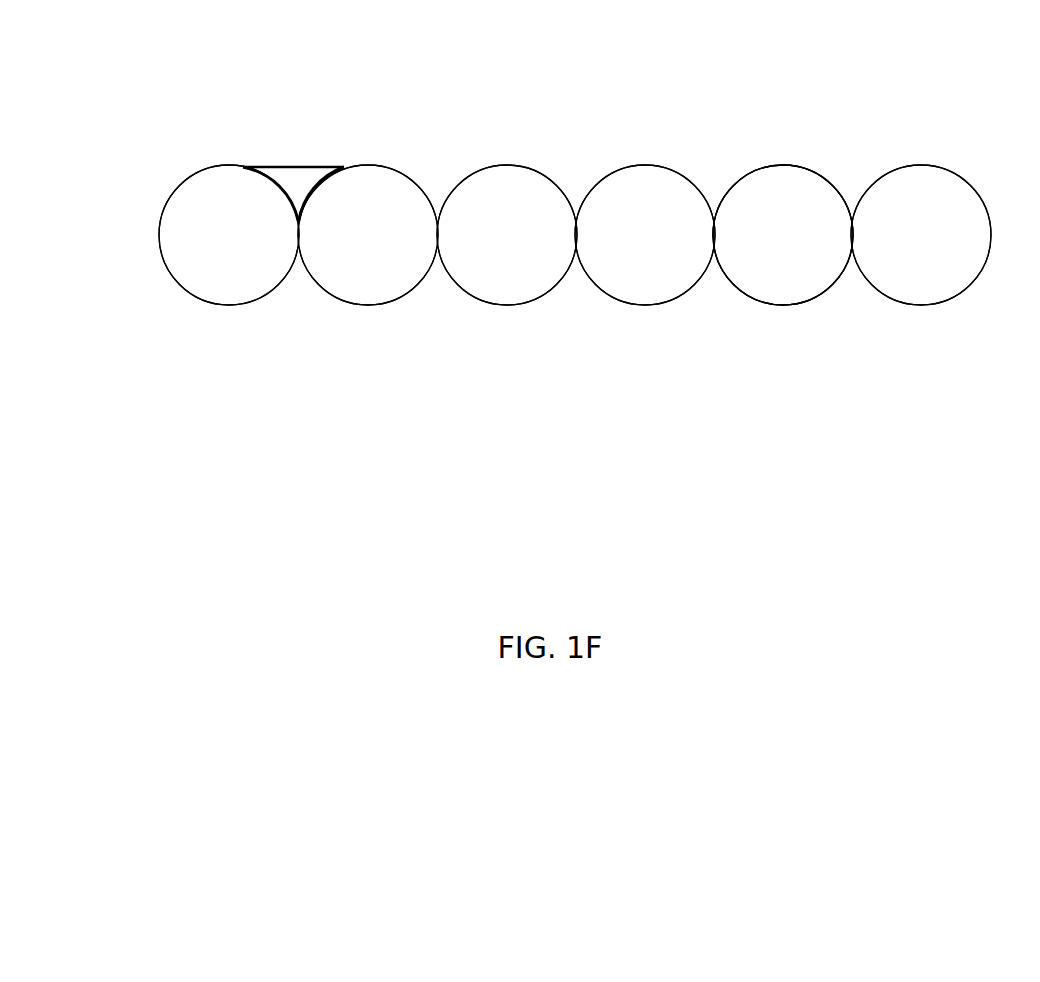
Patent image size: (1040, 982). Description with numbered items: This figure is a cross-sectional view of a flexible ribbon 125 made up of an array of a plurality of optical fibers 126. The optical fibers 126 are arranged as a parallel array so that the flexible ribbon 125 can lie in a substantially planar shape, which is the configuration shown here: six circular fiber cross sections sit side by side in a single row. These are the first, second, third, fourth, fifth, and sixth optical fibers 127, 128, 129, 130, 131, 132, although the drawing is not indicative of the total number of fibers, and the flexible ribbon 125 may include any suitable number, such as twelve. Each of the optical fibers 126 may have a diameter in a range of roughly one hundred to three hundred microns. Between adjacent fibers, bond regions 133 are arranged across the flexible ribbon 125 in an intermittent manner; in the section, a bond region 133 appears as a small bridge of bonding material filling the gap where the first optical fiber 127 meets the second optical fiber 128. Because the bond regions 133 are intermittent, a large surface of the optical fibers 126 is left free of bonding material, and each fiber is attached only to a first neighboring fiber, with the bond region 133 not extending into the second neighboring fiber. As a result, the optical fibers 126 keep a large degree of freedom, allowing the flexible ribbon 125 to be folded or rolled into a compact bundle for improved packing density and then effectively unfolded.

The flexible ribbon 125 is at (165, 148).
The optical fibers 126 is at (775, 163).
The first optical fiber 127 is at (249, 252).
The second optical fiber 128 is at (389, 242).
The third optical fiber 129 is at (539, 242).
The fourth optical fiber 130 is at (674, 242).
The fifth optical fiber 131 is at (819, 252).
The sixth optical fiber 132 is at (954, 243).
The bond regions 133 is at (302, 180).